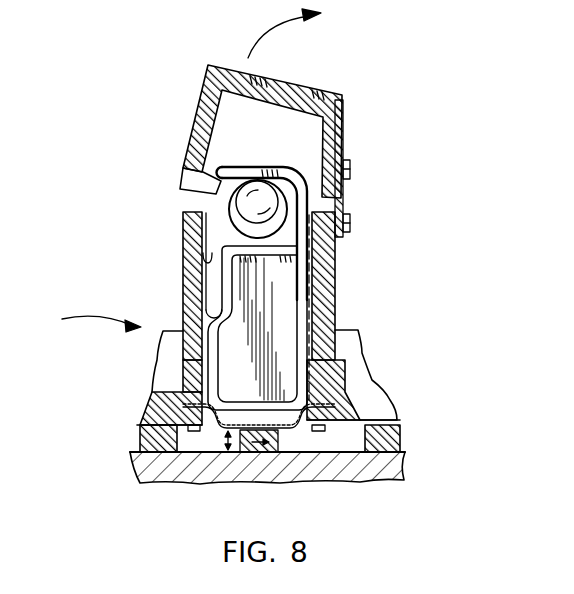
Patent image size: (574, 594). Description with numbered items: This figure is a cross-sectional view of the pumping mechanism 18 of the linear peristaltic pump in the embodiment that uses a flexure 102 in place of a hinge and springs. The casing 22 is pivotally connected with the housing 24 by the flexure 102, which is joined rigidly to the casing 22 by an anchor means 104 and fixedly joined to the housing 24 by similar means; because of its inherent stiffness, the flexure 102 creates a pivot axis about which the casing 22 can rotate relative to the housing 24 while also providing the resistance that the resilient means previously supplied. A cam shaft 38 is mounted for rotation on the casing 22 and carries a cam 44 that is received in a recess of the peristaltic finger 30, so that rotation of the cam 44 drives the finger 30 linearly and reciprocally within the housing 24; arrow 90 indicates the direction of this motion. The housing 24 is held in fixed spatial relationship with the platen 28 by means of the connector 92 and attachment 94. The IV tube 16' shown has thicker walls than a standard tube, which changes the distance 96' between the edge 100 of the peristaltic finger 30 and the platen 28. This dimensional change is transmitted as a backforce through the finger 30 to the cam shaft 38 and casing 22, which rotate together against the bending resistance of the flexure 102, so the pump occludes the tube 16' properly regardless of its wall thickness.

The IV tube 16' is at (277, 461).
The pumping mechanism 18 is at (261, 367).
The casing 22 is at (287, 118).
The housing 24 is at (190, 264).
The platen 28 is at (165, 468).
The peristaltic finger 30 is at (270, 282).
The cam shaft 38 is at (189, 178).
The cam 44 is at (228, 207).
The arrow 90 is at (268, 35).
The connector 92 is at (357, 364).
The attachment 94 is at (393, 437).
The distance 96' is at (190, 477).
The edge 100 is at (332, 392).
The flexure 102 is at (346, 200).
The anchor means 104 is at (352, 178).